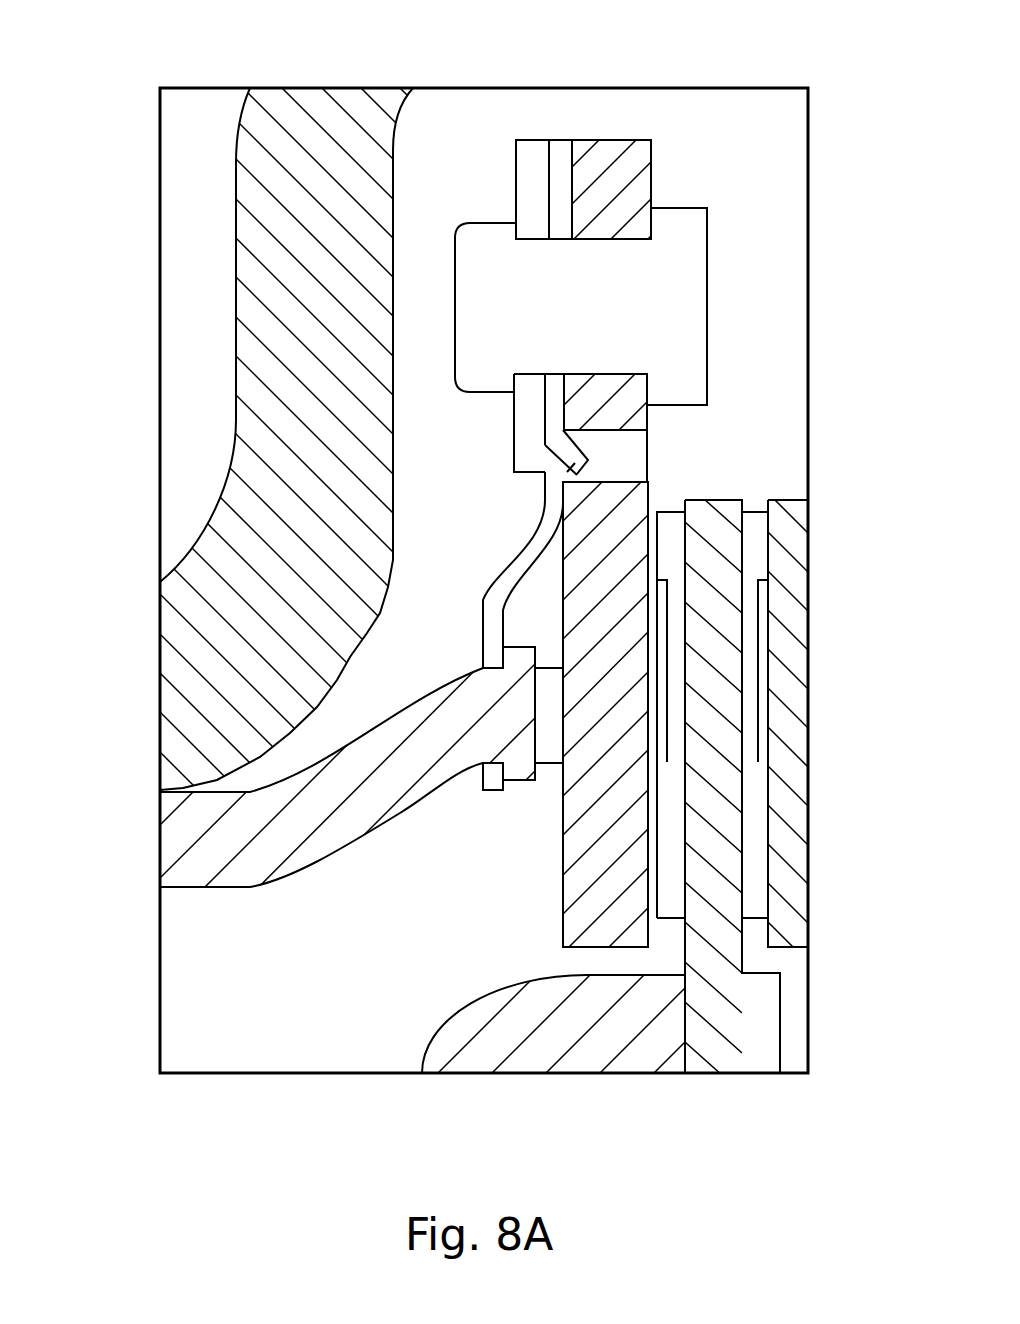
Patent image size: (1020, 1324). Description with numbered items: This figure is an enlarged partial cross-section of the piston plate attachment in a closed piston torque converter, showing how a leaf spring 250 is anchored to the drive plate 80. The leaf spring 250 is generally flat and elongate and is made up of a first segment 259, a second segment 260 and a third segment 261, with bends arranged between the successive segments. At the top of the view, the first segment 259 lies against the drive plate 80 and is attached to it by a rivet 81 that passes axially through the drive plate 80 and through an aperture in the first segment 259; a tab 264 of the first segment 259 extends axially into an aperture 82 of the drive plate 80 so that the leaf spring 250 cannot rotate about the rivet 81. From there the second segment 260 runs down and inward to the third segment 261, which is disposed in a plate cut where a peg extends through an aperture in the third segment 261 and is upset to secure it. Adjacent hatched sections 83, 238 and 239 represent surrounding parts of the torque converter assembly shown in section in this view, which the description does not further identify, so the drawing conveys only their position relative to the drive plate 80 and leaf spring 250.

The drive plate 80 is at (625, 140).
The rivet 81 is at (635, 326).
The aperture 82 is at (617, 465).
The bearing retainer 83 is at (537, 152).
The housing 238 is at (358, 760).
The rotor 239 is at (540, 738).
The leaf spring 250 is at (490, 787).
The first segment 259 is at (560, 185).
The second segment 260 is at (495, 563).
The third segment 261 is at (500, 632).
The tab 264 is at (563, 468).